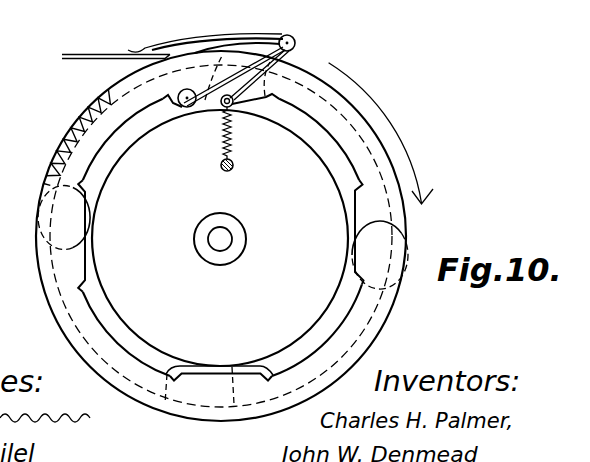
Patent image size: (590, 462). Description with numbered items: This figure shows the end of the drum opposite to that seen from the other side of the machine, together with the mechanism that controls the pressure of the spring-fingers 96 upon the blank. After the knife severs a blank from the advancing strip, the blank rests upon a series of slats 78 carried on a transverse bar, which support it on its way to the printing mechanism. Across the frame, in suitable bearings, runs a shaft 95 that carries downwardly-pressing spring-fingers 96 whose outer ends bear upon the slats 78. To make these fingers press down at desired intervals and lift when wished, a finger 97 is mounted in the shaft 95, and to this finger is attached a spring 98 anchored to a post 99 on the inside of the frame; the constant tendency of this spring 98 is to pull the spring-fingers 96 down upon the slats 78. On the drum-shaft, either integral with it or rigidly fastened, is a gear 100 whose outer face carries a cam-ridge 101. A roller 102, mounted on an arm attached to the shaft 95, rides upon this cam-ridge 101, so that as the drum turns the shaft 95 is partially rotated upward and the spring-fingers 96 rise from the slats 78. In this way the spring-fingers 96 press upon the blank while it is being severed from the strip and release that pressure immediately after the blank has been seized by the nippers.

The slats 78 is at (116, 48).
The shaft 95 is at (296, 43).
The spring-fingers 96 is at (205, 32).
The finger 97 is at (250, 88).
The spring 98 is at (232, 137).
The post 99 is at (233, 165).
The gear 100 is at (79, 124).
The cam-ridge 101 is at (100, 131).
The roller 102 is at (180, 91).